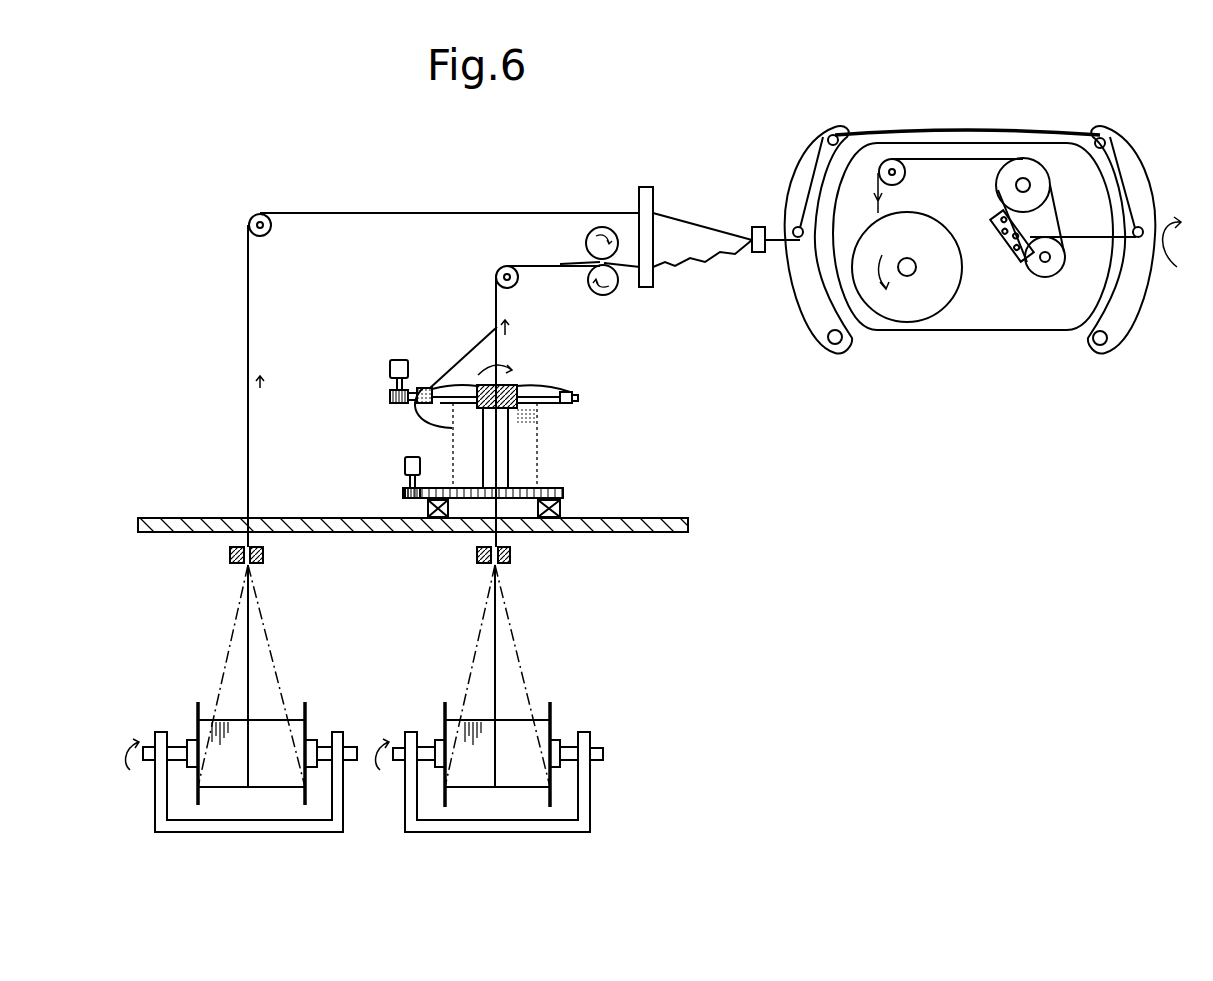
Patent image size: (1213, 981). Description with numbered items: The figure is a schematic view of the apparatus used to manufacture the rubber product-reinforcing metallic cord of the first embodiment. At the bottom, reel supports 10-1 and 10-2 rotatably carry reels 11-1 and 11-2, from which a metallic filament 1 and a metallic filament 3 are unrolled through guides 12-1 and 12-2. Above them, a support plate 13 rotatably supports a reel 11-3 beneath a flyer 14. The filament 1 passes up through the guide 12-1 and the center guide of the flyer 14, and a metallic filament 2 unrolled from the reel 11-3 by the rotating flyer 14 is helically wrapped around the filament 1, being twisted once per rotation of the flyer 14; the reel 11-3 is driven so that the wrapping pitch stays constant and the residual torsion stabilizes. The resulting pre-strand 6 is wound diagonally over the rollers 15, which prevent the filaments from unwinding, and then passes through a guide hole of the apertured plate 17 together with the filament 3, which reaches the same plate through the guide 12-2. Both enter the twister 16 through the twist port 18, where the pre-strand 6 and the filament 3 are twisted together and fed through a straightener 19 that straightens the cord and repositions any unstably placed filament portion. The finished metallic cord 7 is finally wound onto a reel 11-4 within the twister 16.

The metallic filament 1 is at (495, 663).
The metallic filament 2 is at (442, 377).
The metallic filament 3 is at (248, 650).
The pre-strand 6 is at (577, 265).
The rubber product-reinforcing metallic cord 7 is at (967, 161).
The reel support 10-1 is at (588, 820).
The reel support 10-2 is at (342, 813).
The reel 11-1 is at (550, 710).
The reel 11-2 is at (307, 710).
The reel 11-3 is at (528, 475).
The reel 11-4 is at (915, 307).
The guide 12-1 is at (507, 563).
The guide 12-2 is at (263, 563).
The support plate 13 is at (598, 520).
The flyer 14 is at (547, 387).
The rollers for preventing untwisting of filaments 15 is at (607, 296).
The twister 16 is at (1010, 115).
The apertured plate 17 is at (647, 282).
The twist port 18 is at (758, 253).
The straightener 19 is at (1026, 274).